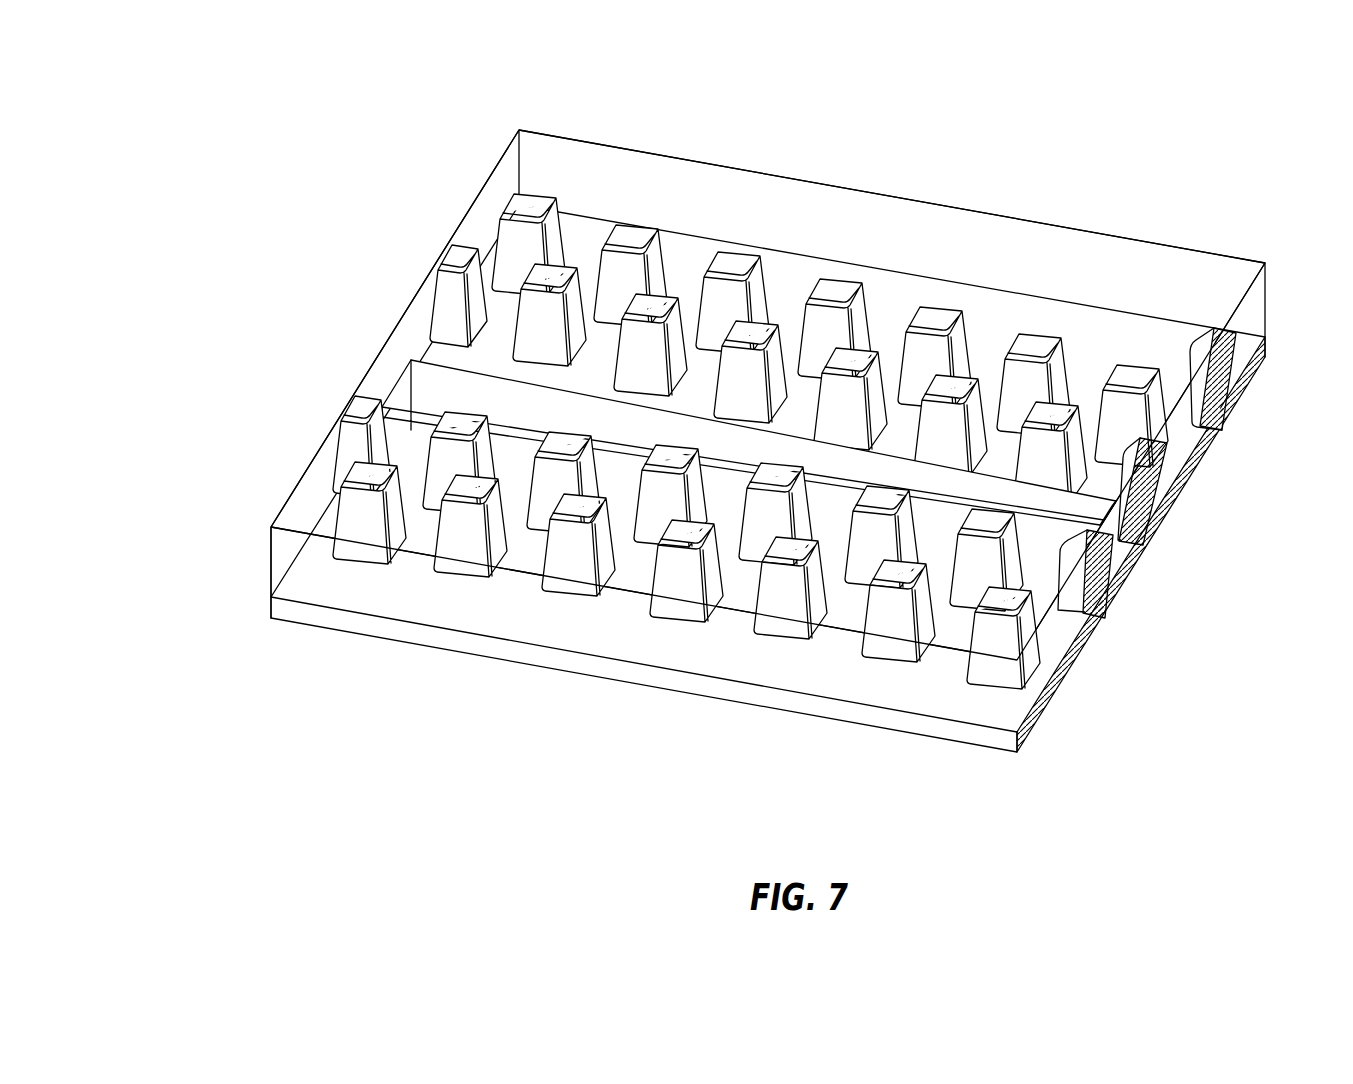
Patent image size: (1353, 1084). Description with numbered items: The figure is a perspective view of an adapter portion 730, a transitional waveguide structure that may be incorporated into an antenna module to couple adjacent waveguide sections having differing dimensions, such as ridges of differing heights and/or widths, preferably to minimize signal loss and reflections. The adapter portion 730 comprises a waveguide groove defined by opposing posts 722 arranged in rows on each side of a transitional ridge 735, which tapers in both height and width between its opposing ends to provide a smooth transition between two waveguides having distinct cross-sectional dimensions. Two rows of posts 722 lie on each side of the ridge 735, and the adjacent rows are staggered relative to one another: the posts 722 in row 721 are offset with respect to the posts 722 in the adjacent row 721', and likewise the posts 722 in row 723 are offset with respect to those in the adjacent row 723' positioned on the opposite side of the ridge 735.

The adapter portion 730 is at (975, 176).
The row 721 is at (587, 575).
The adjacent row 721' is at (645, 503).
The posts 722 is at (1032, 352).
The row 723 is at (759, 394).
The adjacent row 723' is at (746, 319).
The transitional ridge 735 is at (430, 402).